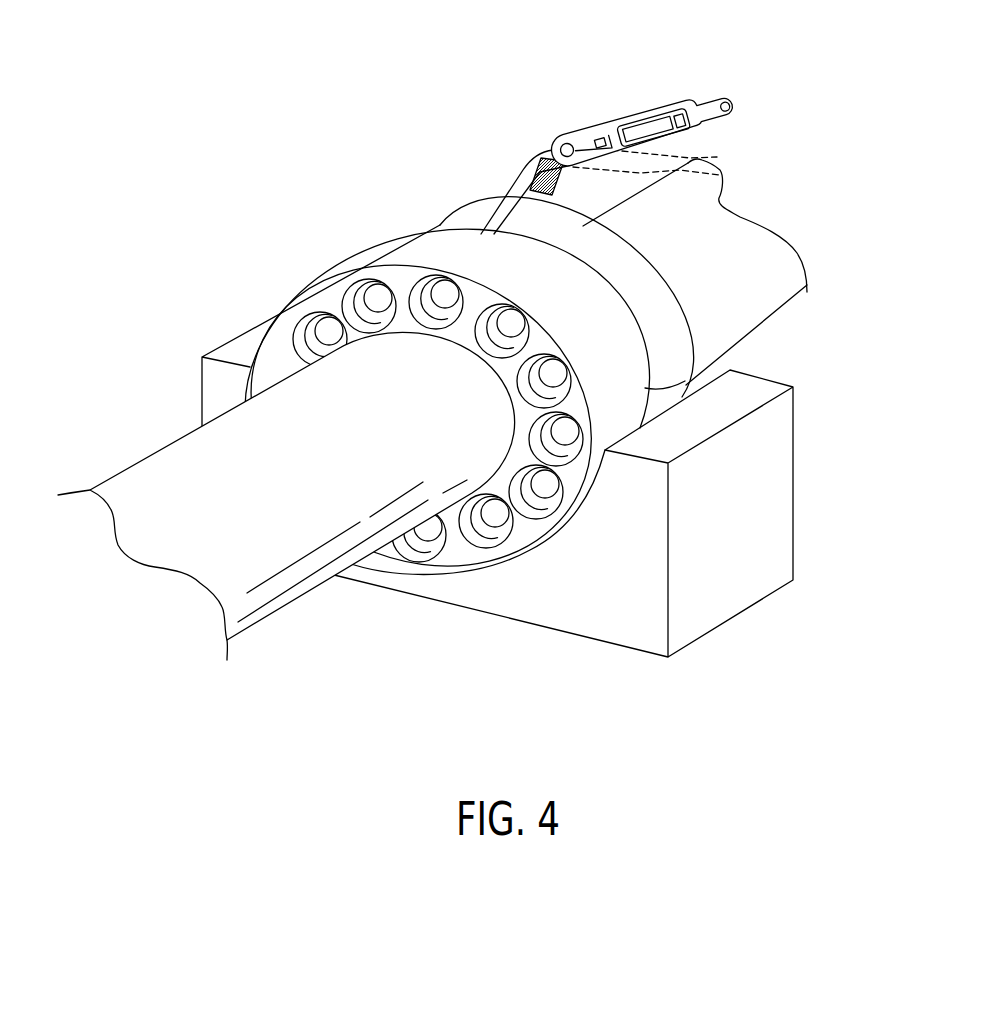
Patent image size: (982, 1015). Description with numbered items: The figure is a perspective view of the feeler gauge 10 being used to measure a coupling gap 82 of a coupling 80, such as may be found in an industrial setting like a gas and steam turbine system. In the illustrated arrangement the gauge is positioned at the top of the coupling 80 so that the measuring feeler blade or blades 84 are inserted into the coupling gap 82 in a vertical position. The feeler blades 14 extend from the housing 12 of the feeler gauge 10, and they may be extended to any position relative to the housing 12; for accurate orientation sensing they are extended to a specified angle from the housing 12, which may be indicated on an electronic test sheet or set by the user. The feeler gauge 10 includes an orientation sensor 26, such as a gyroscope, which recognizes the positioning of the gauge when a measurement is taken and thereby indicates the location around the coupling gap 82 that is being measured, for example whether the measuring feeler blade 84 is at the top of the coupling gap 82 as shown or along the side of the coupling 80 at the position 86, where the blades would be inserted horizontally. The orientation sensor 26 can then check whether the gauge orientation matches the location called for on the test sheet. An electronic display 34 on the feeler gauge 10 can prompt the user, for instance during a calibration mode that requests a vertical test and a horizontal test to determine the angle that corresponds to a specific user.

The feeler gauge 10 is at (713, 60).
The housing 12 is at (612, 114).
The feeler blades 14 is at (718, 170).
The orientation sensor 26 is at (563, 134).
The electronic display 34 is at (653, 124).
The coupling 80 is at (383, 262).
The coupling gap 82 is at (598, 284).
The measuring feeler blade 84 is at (500, 205).
The position 86 is at (687, 384).